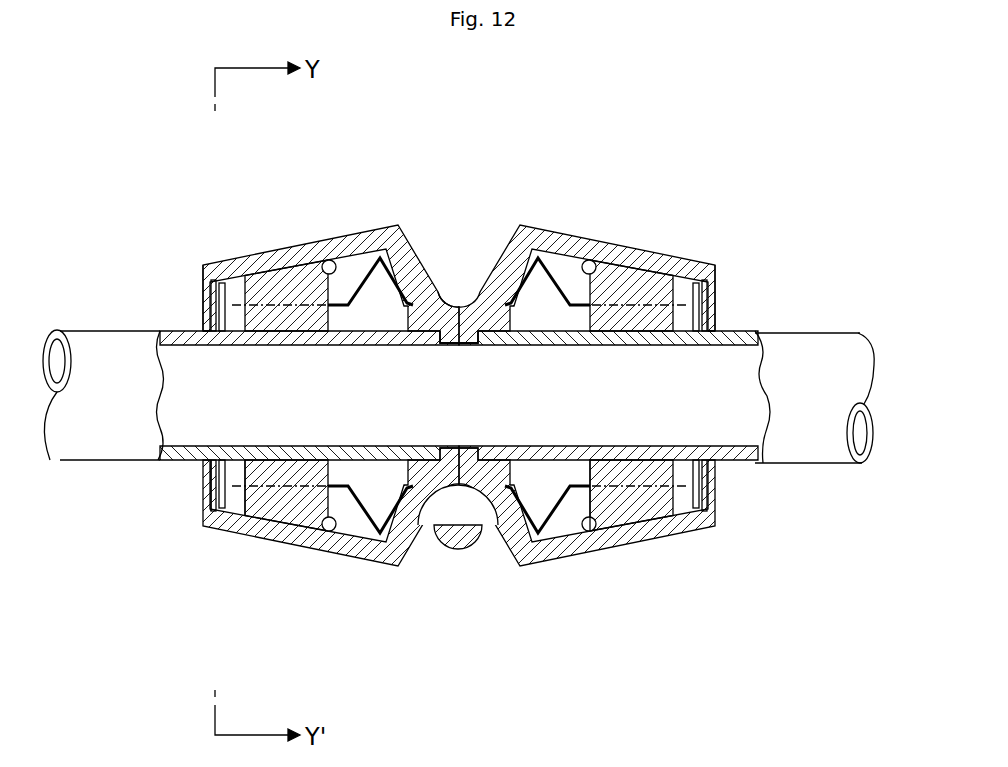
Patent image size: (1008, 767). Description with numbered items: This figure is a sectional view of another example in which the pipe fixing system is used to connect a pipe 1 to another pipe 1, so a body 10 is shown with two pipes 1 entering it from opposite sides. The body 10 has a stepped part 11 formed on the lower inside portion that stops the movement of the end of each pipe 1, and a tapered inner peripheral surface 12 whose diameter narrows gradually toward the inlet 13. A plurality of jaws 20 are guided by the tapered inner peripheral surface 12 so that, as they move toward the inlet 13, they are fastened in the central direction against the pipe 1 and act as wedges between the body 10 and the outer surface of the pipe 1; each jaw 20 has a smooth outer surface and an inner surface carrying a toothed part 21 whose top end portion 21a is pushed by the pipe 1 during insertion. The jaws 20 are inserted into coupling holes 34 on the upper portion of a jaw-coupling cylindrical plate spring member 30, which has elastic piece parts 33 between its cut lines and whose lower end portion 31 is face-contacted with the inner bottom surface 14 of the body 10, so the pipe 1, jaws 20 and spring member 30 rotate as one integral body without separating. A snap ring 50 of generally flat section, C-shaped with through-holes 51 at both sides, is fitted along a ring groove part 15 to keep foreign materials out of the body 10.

The pipe 1 is at (820, 353).
The body 10 is at (373, 228).
The stepped part 11 is at (478, 290).
The tapered inner peripheral surface 12 is at (329, 260).
The inlet 13 is at (200, 323).
The inner bottom surface 14 is at (438, 290).
The ring groove part 15 is at (714, 290).
The jaw 20 is at (266, 275).
The toothed part 21 is at (287, 535).
The top end portion 21a is at (209, 500).
The jaw-coupling cylindrical plate spring member 30 is at (360, 542).
The lower end portion 31 is at (503, 300).
The elastic piece part 33 is at (458, 549).
The coupling hole 34 is at (604, 540).
The snap ring 50 is at (215, 280).
The through-hole 51 is at (205, 318).